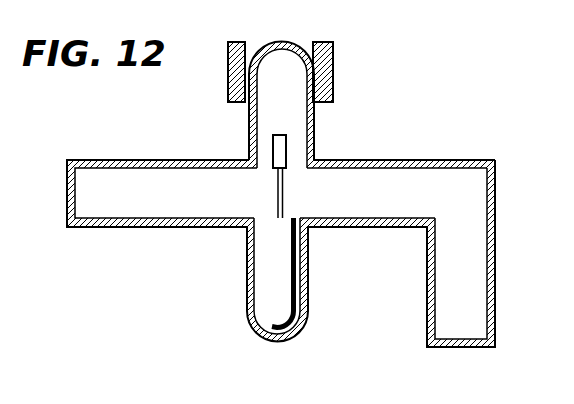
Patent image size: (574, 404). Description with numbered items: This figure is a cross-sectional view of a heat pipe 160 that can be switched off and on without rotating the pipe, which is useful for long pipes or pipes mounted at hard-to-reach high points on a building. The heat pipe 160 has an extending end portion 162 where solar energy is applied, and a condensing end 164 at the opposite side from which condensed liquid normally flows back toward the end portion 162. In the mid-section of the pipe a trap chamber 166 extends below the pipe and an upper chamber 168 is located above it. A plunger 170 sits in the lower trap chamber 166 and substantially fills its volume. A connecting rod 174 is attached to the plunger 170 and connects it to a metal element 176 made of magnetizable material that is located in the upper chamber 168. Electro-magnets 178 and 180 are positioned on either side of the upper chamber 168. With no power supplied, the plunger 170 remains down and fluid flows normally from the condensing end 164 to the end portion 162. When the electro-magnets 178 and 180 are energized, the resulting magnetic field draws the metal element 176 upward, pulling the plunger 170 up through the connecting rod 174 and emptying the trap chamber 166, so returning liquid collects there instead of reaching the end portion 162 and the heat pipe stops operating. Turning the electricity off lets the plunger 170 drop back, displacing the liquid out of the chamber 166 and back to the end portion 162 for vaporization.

The heat pipe 160 is at (452, 150).
The extending end portion 162 is at (496, 274).
The condensing end 164 is at (97, 149).
The trap chamber 166 is at (302, 320).
The upper chamber 168 is at (309, 140).
The plunger 170 is at (265, 291).
The connecting rod 174 is at (278, 196).
The metal element 176 is at (273, 145).
The electro-magnet 178 is at (228, 67).
The electro-magnet 180 is at (334, 76).